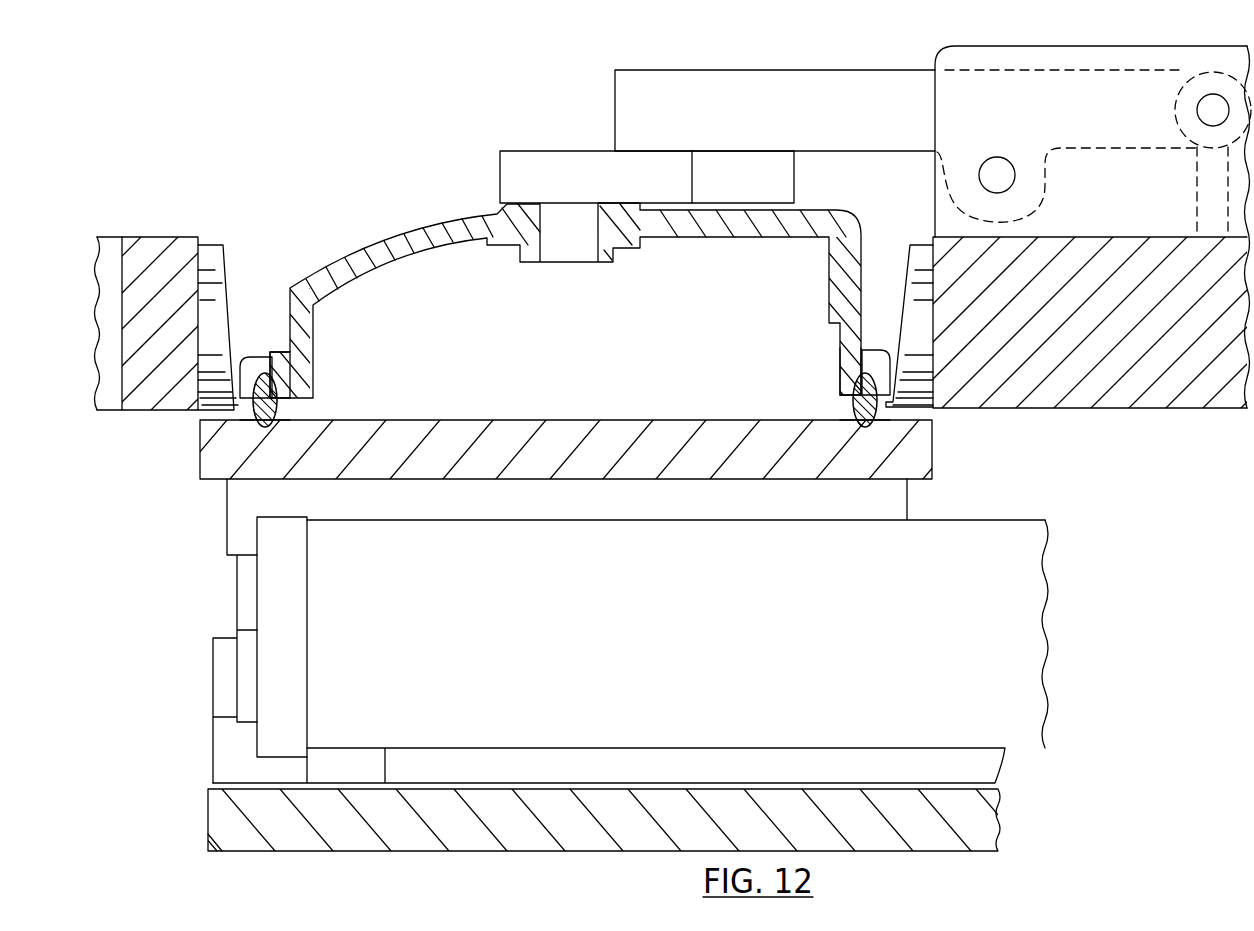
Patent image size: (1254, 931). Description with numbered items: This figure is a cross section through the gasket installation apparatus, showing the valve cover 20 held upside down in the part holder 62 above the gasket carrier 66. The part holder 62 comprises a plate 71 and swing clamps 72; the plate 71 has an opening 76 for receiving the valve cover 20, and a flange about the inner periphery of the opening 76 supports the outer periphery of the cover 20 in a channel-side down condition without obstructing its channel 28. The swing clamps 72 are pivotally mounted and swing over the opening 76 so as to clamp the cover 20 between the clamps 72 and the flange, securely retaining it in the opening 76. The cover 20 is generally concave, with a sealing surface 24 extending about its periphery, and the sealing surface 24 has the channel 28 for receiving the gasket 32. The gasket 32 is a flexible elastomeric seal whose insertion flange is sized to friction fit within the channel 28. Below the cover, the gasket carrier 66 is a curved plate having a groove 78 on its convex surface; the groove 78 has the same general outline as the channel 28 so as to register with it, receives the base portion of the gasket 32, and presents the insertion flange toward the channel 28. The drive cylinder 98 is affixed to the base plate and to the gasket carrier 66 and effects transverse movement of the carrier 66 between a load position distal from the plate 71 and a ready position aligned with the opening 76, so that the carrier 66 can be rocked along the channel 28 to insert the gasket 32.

The valve cover 20 is at (380, 224).
The sealing surface 24 is at (318, 368).
The channel 28 is at (258, 357).
The gasket 32 is at (278, 406).
The part holder 62 is at (184, 180).
The gasket carrier 66 is at (540, 410).
The plate 71 is at (133, 237).
The swing clamps 72 is at (802, 88).
The opening 76 is at (263, 260).
The groove 78 is at (258, 428).
The drive cylinder 98 is at (637, 654).